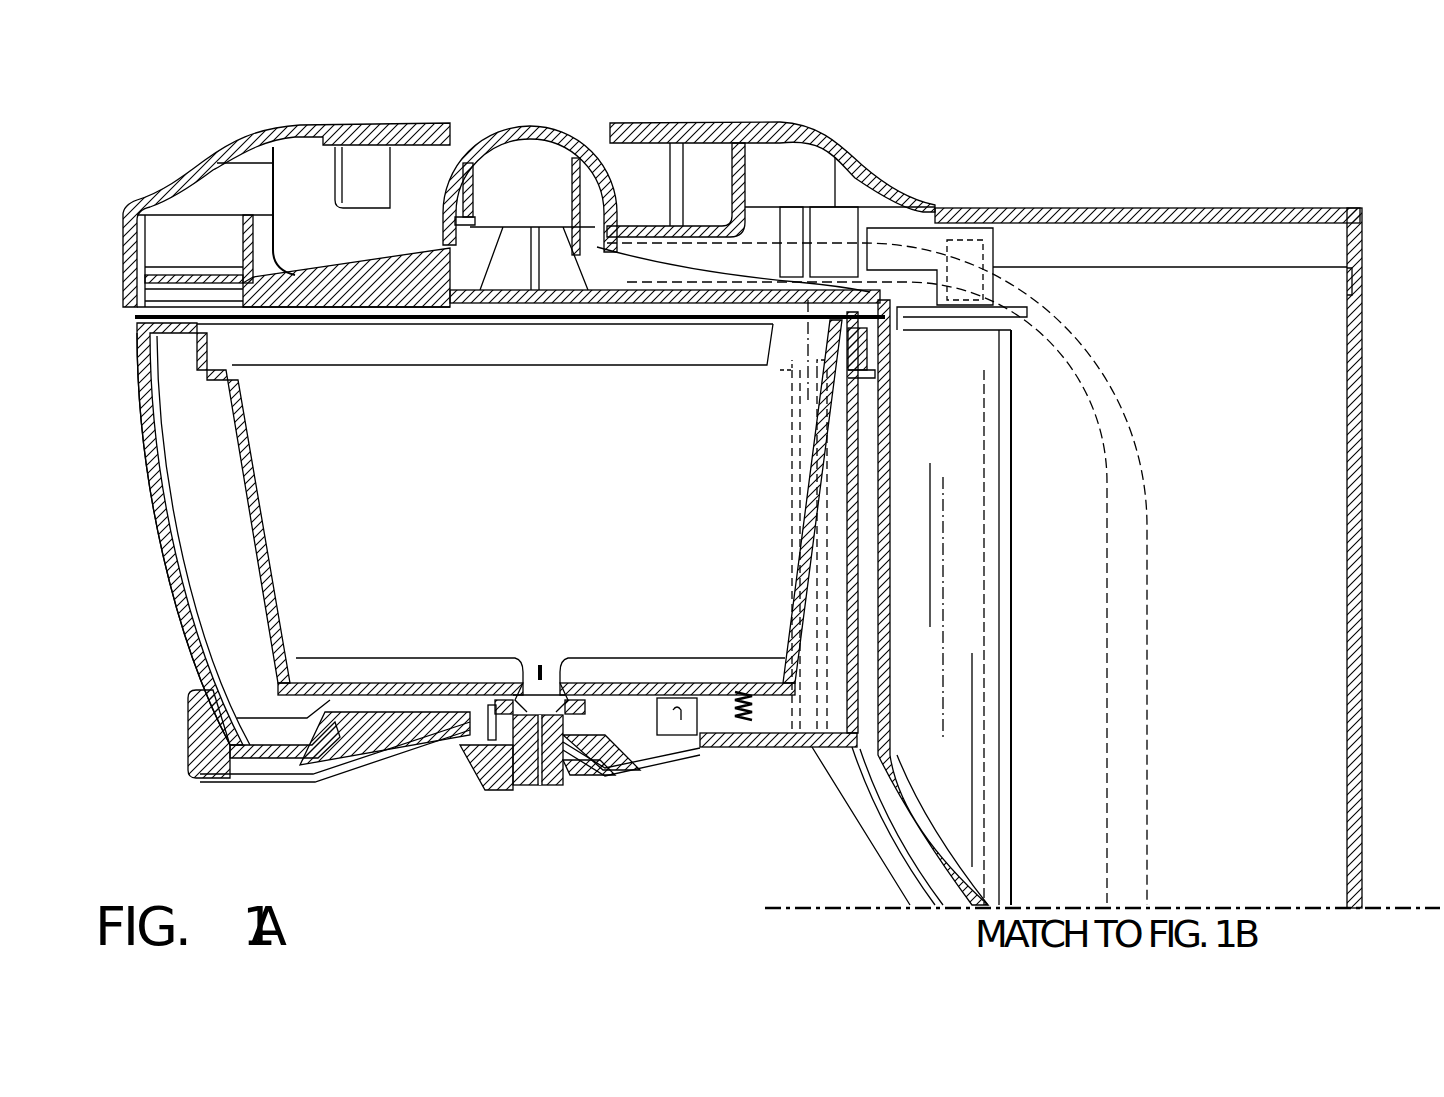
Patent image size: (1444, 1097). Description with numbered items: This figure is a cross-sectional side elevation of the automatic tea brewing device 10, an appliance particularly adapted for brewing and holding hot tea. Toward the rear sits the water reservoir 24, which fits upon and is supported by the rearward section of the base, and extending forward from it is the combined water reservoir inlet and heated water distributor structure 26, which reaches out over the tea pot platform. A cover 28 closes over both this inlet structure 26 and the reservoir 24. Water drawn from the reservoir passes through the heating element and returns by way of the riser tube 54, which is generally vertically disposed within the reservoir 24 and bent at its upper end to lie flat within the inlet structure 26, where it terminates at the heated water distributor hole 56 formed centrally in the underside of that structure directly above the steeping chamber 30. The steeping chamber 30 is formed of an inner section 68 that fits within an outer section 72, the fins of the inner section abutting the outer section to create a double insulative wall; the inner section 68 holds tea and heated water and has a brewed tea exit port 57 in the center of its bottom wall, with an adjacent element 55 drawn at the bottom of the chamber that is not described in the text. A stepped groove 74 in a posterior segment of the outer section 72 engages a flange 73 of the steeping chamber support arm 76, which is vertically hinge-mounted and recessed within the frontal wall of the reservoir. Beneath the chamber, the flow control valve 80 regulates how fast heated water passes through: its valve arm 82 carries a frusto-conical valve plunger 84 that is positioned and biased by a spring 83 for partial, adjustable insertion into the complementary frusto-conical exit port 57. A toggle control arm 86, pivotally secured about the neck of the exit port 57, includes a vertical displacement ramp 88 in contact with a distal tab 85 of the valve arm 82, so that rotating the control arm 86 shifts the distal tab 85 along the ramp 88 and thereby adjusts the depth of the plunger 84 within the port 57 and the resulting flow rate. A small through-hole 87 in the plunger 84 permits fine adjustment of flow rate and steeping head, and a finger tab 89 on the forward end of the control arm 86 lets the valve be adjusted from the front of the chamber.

The automatic tea brewing device 10 is at (1170, 125).
The water reservoir 24 is at (1365, 510).
The combined water reservoir inlet and heated water distributor structure 26 is at (367, 253).
The cover 28 is at (848, 160).
The steeping chamber 30 is at (142, 528).
The riser tube 54 is at (1150, 808).
The drain opening 55 is at (532, 645).
The heated water distributor hole 56 is at (537, 318).
The brewed tea exit port 57 is at (552, 680).
The inner section 68 is at (243, 430).
The outer section 72 is at (192, 625).
The flange 73 is at (870, 345).
The stepped groove 74 is at (895, 378).
The steeping chamber support arm 76 is at (907, 852).
The flow control valve 80 is at (468, 800).
The valve arm 82 is at (613, 752).
The spring 83 is at (724, 705).
The valve plunger 84 is at (558, 758).
The distal tab 85 is at (462, 773).
The toggle control arm 86 is at (340, 755).
The through-hole 87 is at (545, 760).
The vertical displacement ramp 88 is at (493, 750).
The finger tab 89 is at (200, 725).